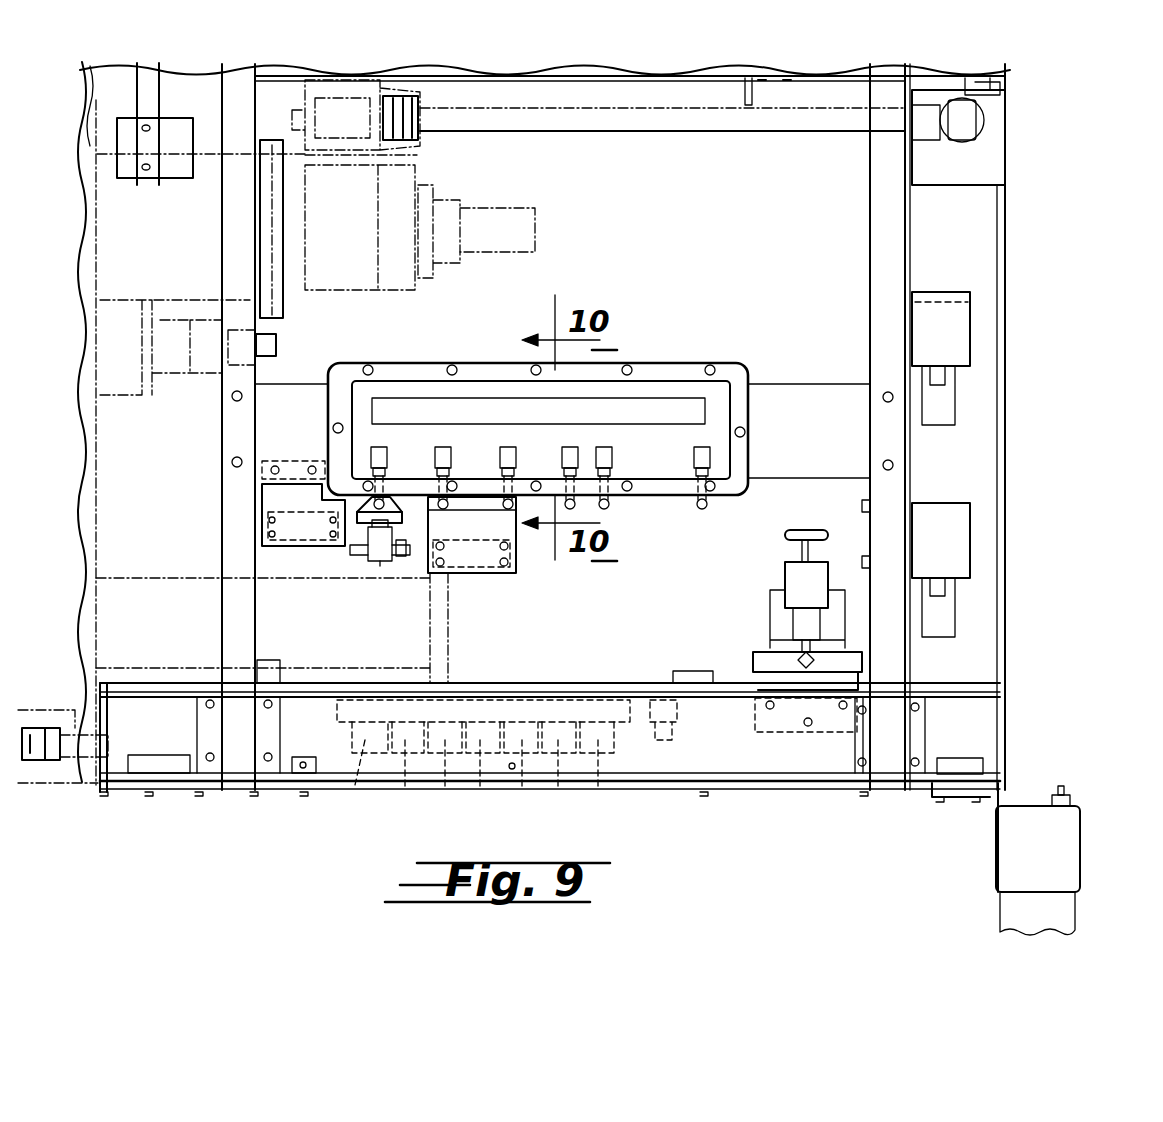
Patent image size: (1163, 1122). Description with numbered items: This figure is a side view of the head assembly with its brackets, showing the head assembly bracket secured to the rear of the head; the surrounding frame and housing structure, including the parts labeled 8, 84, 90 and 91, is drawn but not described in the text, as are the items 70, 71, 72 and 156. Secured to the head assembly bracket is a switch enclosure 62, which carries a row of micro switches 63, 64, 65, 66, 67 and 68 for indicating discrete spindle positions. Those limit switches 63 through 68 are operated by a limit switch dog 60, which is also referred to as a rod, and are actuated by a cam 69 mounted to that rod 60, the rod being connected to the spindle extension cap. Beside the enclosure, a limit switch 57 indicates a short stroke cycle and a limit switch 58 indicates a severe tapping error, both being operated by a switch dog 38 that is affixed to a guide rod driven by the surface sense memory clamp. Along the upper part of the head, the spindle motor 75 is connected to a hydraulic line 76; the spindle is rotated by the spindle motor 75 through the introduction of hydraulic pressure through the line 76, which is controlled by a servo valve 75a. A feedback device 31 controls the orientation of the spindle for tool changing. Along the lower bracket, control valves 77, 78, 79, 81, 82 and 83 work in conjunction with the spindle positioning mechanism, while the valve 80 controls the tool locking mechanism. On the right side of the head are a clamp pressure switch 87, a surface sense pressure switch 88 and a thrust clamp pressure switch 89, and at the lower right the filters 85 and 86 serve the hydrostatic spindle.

The housing 8 is at (1020, 374).
The feedback device 31 is at (278, 345).
The switch dog 38 is at (388, 566).
The limit switch 57 is at (478, 557).
The limit switch 58 is at (318, 530).
The limit switch dog 60 is at (403, 516).
The switch enclosure 62 is at (664, 363).
The micro switch 63 is at (379, 446).
The micro switch 64 is at (443, 446).
The micro switch 65 is at (508, 446).
The micro switch 66 is at (570, 446).
The micro switch 67 is at (604, 446).
The micro switch 68 is at (702, 446).
The cam 69 is at (384, 498).
The terminal block 70 is at (505, 712).
The control unit housing 71 is at (499, 551).
The junction box 72 is at (303, 529).
The spindle motor 75 is at (420, 177).
The servo valve 75a is at (537, 222).
The hydraulic line 76 is at (750, 133).
The control valve 77 is at (361, 771).
The control valve 78 is at (406, 774).
The control valve 79 is at (446, 769).
The valve 80 is at (483, 775).
The control valve 81 is at (521, 769).
The control valve 82 is at (559, 773).
The control valve 83 is at (603, 769).
The bearing block 84 is at (990, 152).
The filter 85 is at (1047, 859).
The filter 86 is at (1060, 855).
The clamp pressure switch 87 is at (1007, 570).
The surface sense pressure switch 88 is at (972, 540).
The thrust clamp pressure switch 89 is at (962, 327).
The connector 90 is at (672, 740).
The conduit 91 is at (50, 762).
The shut-off valve 156 is at (790, 560).